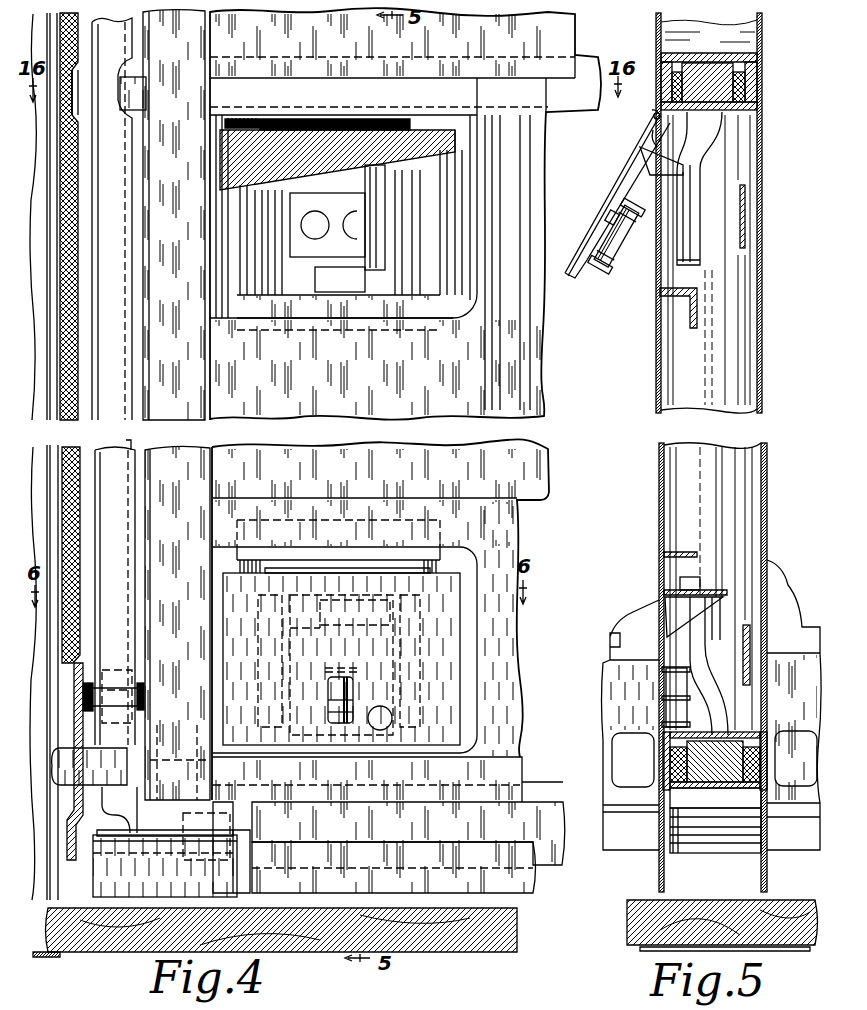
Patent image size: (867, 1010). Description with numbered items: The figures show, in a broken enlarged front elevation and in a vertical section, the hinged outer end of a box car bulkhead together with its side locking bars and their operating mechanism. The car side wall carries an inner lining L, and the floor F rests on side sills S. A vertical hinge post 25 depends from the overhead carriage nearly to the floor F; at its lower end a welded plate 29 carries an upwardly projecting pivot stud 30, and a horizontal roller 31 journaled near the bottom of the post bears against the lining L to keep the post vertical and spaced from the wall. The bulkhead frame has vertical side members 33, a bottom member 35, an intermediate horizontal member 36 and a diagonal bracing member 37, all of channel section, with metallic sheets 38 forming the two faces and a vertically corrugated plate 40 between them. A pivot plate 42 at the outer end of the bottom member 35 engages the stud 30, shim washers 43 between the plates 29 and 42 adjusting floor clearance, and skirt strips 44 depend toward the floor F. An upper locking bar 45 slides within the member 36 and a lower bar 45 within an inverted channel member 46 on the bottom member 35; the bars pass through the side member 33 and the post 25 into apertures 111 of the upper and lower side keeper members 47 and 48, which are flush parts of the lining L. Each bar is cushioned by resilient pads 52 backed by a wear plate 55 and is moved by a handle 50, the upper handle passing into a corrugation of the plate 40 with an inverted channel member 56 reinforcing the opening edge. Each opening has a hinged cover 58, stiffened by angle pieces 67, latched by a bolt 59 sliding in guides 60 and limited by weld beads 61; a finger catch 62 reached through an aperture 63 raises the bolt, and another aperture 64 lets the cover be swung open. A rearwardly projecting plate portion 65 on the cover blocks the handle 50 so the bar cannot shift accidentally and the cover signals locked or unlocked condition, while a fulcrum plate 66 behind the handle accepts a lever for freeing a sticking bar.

In FIG. 4, the hinge post 25 is at (133, 325).
In FIG. 4, the plate 29 is at (160, 840).
In FIG. 5, the plate 29 is at (746, 840).
In FIG. 4, the pivot stud 30 is at (207, 855).
In FIG. 5, the pivot stud 30 is at (694, 855).
In FIG. 4, the horizontal roller 31 is at (96, 697).
In FIG. 4, the vertical side member 33 is at (205, 380).
In FIG. 4, the bottom member 35 is at (425, 823).
In FIG. 5, the bottom member 35 is at (662, 806).
In FIG. 4, the intermediate horizontal member 36 is at (585, 72).
In FIG. 5, the intermediate horizontal member 36 is at (713, 57).
In FIG. 5, the diagonal bracing member 37 is at (762, 44).
In FIG. 4, the metallic sheet 38 is at (323, 48).
In FIG. 5, the metallic sheet 38 is at (656, 376).
In FIG. 5, the corrugated plate 40 is at (716, 384).
In FIG. 4, the pivot plate 42 is at (240, 816).
In FIG. 5, the pivot plate 42 is at (767, 818).
In FIG. 4, the shim washer 43 is at (250, 832).
In FIG. 5, the shim washer 43 is at (706, 812).
In FIG. 4, the skirt strip 44 is at (397, 886).
In FIG. 5, the skirt strip 44 is at (659, 885).
In FIG. 4, the locking bar 45 is at (147, 92).
In FIG. 5, the locking bar 45 is at (742, 69).
In FIG. 5, the inverted channel member 46 is at (768, 762).
In FIG. 4, the upper side keeper member 47 is at (78, 55).
In FIG. 4, the lower side keeper member 48 is at (75, 808).
In FIG. 5, the lower side keeper member 48 is at (604, 684).
In FIG. 4, the handle 50 is at (372, 245).
In FIG. 5, the handle 50 is at (677, 258).
In FIG. 5, the resilient pad 52 is at (762, 86).
In FIG. 5, the wear plate 55 is at (715, 798).
In FIG. 4, the inverted channel member 56 is at (392, 305).
In FIG. 5, the inverted channel member 56 is at (660, 302).
In FIG. 4, the cover 58 is at (208, 632).
In FIG. 5, the cover 58 is at (622, 186).
In FIG. 4, the bolt 59 is at (355, 690).
In FIG. 5, the bolt 59 is at (617, 248).
In FIG. 4, the guide 60 is at (338, 660).
In FIG. 5, the guide 60 is at (633, 213).
In FIG. 5, the weld bead 61 is at (629, 232).
In FIG. 4, the finger catch 62 is at (330, 699).
In FIG. 5, the finger catch 62 is at (600, 223).
In FIG. 4, the aperture 63 is at (330, 716).
In FIG. 4, the aperture 64 is at (391, 718).
In FIG. 5, the horizontal plate portion 65 is at (653, 120).
In FIG. 4, the fulcrum plate 66 is at (293, 212).
In FIG. 5, the fulcrum plate 66 is at (746, 196).
In FIG. 4, the angle piece 67 is at (265, 612).
In FIG. 5, the angle piece 67 is at (645, 178).
In FIG. 4, the aperture 111 is at (75, 103).
In FIG. 4, the inner lining L is at (104, 265).
In FIG. 5, the inner lining L is at (785, 588).
In FIG. 4, the floor F is at (472, 952).
In FIG. 5, the floor F is at (630, 912).
In FIG. 4, the side sill S is at (52, 957).
In FIG. 5, the side sill S is at (645, 951).